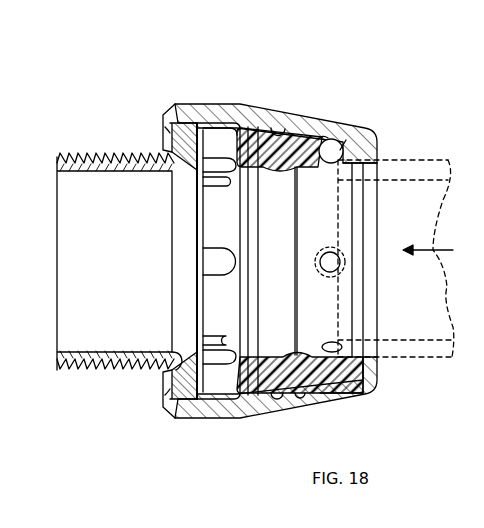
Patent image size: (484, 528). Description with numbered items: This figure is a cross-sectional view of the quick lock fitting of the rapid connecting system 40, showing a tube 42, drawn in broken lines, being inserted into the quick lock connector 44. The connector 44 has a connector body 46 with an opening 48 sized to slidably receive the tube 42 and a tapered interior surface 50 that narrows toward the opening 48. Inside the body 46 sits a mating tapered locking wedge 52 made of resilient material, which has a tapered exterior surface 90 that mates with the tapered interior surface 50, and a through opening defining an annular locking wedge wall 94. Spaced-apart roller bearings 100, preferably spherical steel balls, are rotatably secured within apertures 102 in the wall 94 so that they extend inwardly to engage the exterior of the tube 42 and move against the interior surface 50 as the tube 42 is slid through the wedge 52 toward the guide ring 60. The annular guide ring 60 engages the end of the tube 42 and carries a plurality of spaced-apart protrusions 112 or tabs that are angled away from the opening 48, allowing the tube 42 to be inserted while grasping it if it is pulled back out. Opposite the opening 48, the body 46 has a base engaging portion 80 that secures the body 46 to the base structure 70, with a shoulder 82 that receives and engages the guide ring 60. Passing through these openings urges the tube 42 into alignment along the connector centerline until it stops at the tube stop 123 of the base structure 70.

The rapid connecting system 40 is at (298, 71).
The tube 42 is at (413, 160).
The quick lock connector 44 is at (263, 452).
The connector body 46 is at (267, 113).
The opening 48 is at (373, 167).
The tapered interior surface 50 is at (283, 124).
The tapered locking wedge 52 is at (330, 395).
The annular guide ring 60 is at (233, 125).
The base structure 70 is at (122, 153).
The base engaging portion 80 is at (208, 104).
The shoulder 82 is at (185, 127).
The tapered exterior surface 90 is at (299, 392).
The annular locking wedge wall 94 is at (365, 375).
The roller bearings 100 is at (337, 147).
The apertures 102 is at (323, 133).
The protrusions 112 is at (210, 213).
The tube stop 123 is at (178, 355).